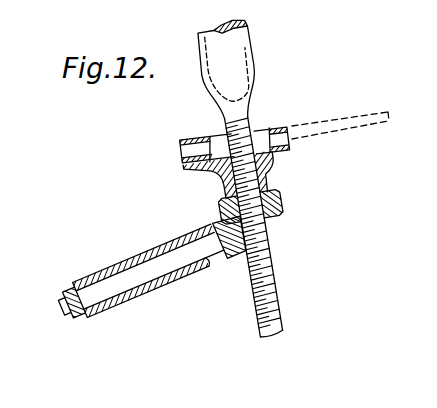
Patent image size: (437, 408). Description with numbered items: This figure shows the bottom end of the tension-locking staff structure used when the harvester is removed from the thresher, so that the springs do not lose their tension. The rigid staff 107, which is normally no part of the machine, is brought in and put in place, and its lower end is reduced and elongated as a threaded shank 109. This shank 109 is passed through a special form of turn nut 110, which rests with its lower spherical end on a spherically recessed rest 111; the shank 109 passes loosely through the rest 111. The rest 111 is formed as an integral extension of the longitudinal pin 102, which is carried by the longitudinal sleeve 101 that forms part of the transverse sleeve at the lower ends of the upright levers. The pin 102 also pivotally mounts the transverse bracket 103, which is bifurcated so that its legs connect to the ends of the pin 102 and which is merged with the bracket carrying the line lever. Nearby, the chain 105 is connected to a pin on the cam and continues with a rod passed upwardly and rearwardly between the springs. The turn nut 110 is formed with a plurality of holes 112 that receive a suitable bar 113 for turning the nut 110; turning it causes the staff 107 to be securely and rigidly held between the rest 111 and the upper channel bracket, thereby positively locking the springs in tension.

The longitudinal sleeve 101 is at (181, 280).
The longitudinal pin 102 is at (118, 282).
The transverse bracket 103 is at (104, 318).
The chain 105 is at (196, 273).
The staff 107 is at (247, 53).
The threaded shank 109 is at (278, 278).
The turn nut 110 is at (272, 172).
The rest 111 is at (280, 212).
The holes 112 is at (182, 157).
The bar 113 is at (338, 130).